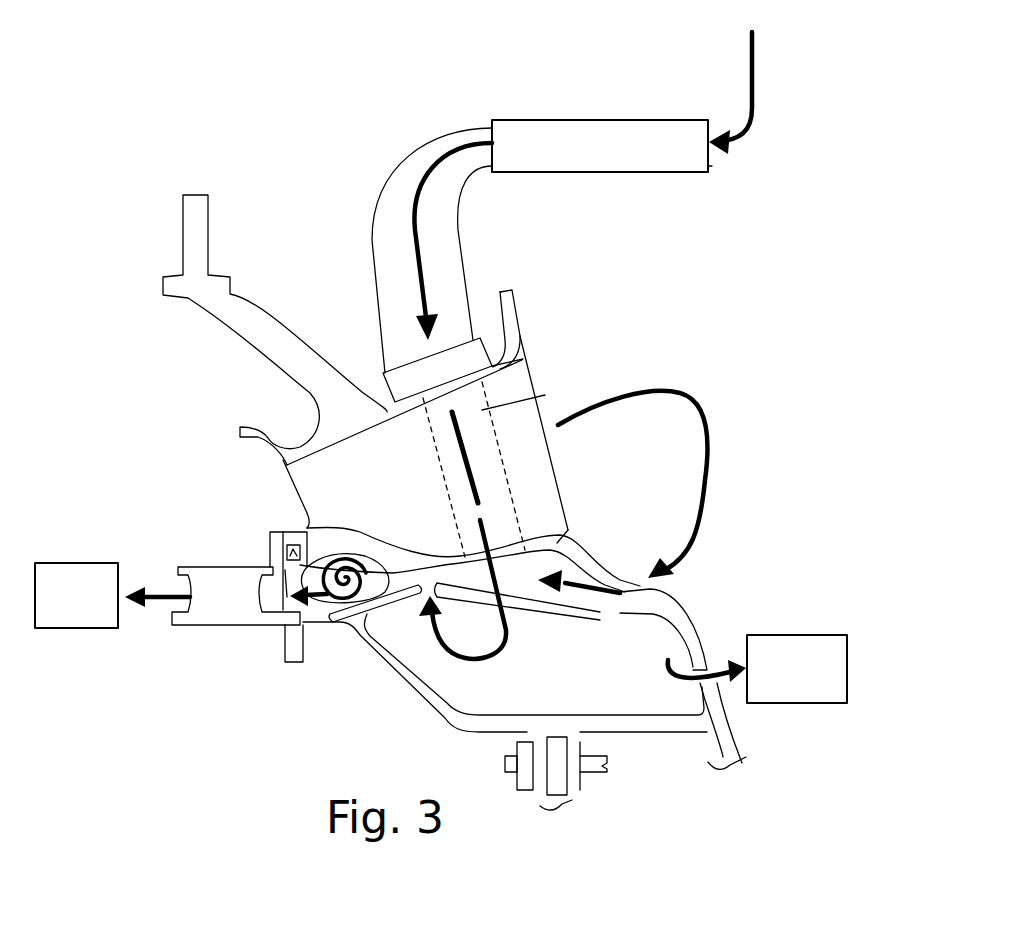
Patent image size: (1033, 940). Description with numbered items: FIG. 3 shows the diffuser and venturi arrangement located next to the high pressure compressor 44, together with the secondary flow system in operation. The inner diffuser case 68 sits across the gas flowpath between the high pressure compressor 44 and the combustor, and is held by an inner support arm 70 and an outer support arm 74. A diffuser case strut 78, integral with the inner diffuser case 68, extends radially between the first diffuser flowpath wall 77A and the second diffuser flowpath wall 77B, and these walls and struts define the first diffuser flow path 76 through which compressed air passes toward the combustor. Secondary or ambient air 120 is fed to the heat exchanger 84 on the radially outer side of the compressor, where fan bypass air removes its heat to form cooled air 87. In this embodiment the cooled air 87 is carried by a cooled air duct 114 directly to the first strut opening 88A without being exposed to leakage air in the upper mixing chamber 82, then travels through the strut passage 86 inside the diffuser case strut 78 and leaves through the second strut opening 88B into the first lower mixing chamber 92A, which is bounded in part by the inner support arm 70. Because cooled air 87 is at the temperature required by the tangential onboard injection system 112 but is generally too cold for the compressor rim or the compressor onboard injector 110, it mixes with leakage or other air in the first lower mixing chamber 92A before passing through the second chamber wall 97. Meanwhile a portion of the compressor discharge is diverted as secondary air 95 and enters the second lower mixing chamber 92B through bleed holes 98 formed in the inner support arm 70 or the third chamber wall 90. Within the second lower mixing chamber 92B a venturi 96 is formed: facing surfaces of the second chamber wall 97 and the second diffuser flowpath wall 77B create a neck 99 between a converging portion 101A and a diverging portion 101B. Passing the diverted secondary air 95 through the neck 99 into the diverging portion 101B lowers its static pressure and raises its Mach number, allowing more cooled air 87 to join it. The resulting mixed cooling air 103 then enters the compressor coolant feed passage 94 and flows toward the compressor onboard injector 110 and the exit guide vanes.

The high pressure compressor 44 is at (73, 630).
The inner diffuser case 68 is at (676, 270).
The inner support arm 70 is at (625, 722).
The outer support arm 74 is at (235, 338).
The first diffuser flow path 76 is at (381, 459).
The first diffuser flowpath wall 77A is at (512, 362).
The second diffuser flowpath wall 77B is at (557, 543).
The diffuser case strut 78 is at (565, 452).
The upper mixing chamber 82 is at (289, 256).
The cooled air heat exchanger 84 is at (708, 166).
The strut passage 86 is at (545, 395).
The cooled air 87 is at (414, 245).
The first strut opening 88A is at (410, 355).
The second strut opening 88B is at (527, 623).
The third chamber wall 90 is at (707, 645).
The first lower mixing chamber 92A is at (602, 705).
The second lower mixing chamber 92B is at (563, 577).
The compressor coolant feed passage 94 is at (287, 570).
The diverted secondary air 95 is at (697, 397).
The venturi 96 is at (400, 562).
The second chamber wall 97 is at (627, 610).
The bleed holes 98 is at (632, 583).
The neck 99 is at (440, 573).
The converging portion 101A is at (573, 588).
The diverging portion 101B is at (380, 570).
The mixed cooling air 103 is at (327, 598).
The compressor onboard injector (COBI) 110 is at (223, 626).
The tangential onboard injection (TOBI) system 112 is at (793, 618).
The cooled air duct 114 is at (394, 146).
The secondary or ambient air 120 is at (748, 74).